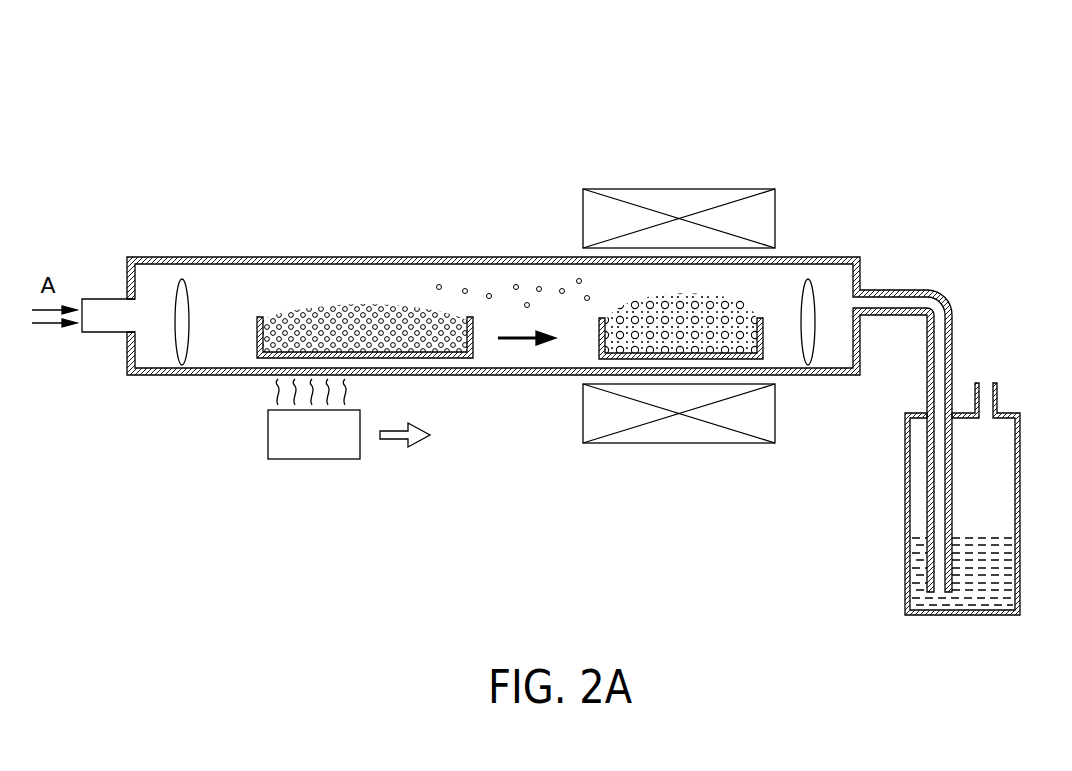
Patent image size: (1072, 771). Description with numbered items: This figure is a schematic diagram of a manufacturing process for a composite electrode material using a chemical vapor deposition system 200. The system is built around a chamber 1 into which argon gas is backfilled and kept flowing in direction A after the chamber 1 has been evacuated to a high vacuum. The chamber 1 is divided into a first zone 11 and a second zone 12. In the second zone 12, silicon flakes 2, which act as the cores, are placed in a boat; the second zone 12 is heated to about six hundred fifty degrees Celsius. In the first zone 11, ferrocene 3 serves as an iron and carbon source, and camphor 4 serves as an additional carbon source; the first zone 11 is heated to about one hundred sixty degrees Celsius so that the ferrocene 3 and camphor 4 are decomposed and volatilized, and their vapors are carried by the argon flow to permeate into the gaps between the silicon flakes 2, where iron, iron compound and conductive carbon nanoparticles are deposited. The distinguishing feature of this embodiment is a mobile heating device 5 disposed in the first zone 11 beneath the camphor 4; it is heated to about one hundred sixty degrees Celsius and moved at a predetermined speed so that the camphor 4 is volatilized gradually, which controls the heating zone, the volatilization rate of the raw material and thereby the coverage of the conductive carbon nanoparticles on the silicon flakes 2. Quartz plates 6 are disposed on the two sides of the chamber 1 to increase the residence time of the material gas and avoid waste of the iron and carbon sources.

The chamber 1 is at (845, 375).
The silicon flakes 2 is at (741, 312).
The ferrocene 3 is at (614, 312).
The camphor 4 is at (332, 307).
The mobile heating device 5 is at (322, 440).
The quartz plates 6 is at (182, 370).
The first zone 11 is at (343, 188).
The second zone 12 is at (699, 170).
The chemical vapor deposition system 200 is at (1000, 132).